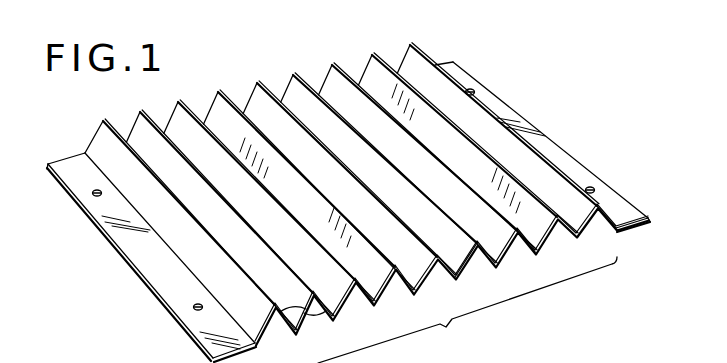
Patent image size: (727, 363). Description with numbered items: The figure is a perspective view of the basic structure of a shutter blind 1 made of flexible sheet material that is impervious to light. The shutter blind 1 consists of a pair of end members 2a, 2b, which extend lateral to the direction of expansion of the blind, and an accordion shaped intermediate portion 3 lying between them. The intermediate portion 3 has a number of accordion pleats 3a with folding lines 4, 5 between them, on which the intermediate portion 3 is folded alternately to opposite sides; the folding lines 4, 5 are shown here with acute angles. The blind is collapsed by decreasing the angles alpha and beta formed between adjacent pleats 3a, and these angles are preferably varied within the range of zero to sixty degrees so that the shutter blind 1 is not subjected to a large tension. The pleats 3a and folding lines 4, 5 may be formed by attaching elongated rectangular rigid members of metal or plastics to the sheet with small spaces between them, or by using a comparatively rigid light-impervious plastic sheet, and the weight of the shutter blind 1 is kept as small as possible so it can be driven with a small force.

The shutter blind 1 is at (307, 65).
The end member 2a is at (148, 278).
The end member 2b is at (579, 163).
The intermediate portion 3 is at (467, 310).
The accordion pleat 3a is at (373, 305).
The folding line 4 is at (460, 265).
The folding line 5 is at (410, 228).